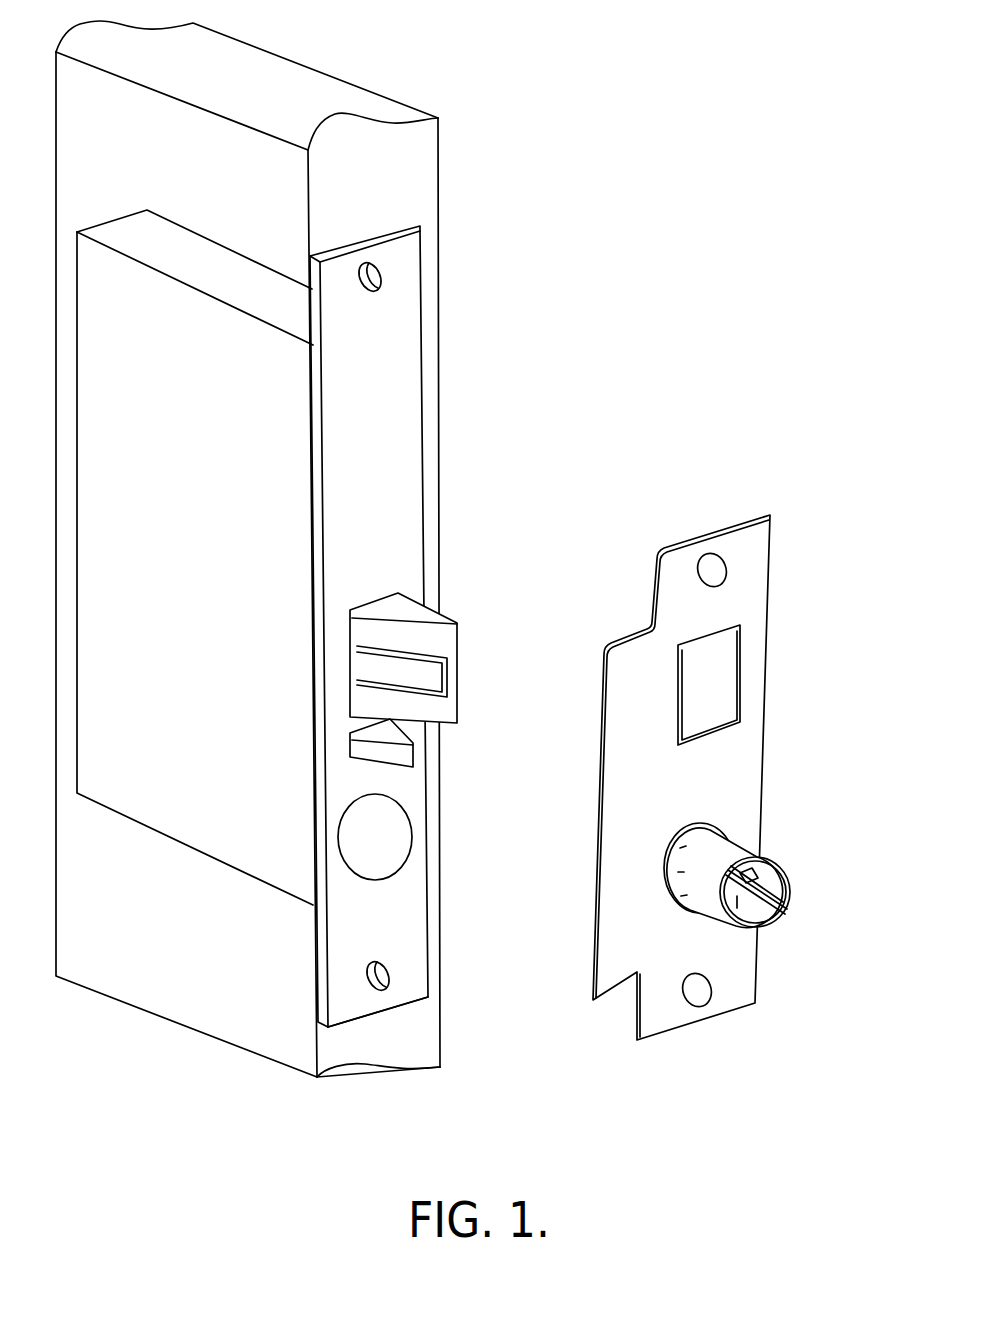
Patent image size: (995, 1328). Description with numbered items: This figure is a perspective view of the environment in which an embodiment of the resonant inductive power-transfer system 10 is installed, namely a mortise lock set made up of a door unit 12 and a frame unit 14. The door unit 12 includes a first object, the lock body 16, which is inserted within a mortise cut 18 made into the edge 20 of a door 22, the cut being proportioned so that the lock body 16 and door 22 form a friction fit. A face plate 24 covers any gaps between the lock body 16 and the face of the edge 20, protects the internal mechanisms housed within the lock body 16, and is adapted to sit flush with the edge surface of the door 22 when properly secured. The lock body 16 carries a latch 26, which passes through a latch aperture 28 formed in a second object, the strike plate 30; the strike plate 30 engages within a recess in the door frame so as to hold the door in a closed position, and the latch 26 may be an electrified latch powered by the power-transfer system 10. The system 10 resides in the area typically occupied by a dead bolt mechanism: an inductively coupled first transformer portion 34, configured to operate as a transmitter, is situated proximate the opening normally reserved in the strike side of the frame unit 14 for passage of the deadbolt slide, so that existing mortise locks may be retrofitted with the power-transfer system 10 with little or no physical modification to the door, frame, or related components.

The power-transfer system 10 is at (658, 870).
The door unit 12 is at (467, 1090).
The frame unit 14 is at (777, 1060).
The lock body 16 is at (138, 798).
The mortise cut 18 is at (378, 1017).
The edge 20 is at (405, 170).
The door 22 is at (381, 93).
The face plate 24 is at (390, 387).
The latch 26 is at (413, 637).
The latch aperture 28 is at (707, 687).
The strike plate 30 is at (672, 598).
The first transformer portion 34 is at (792, 904).